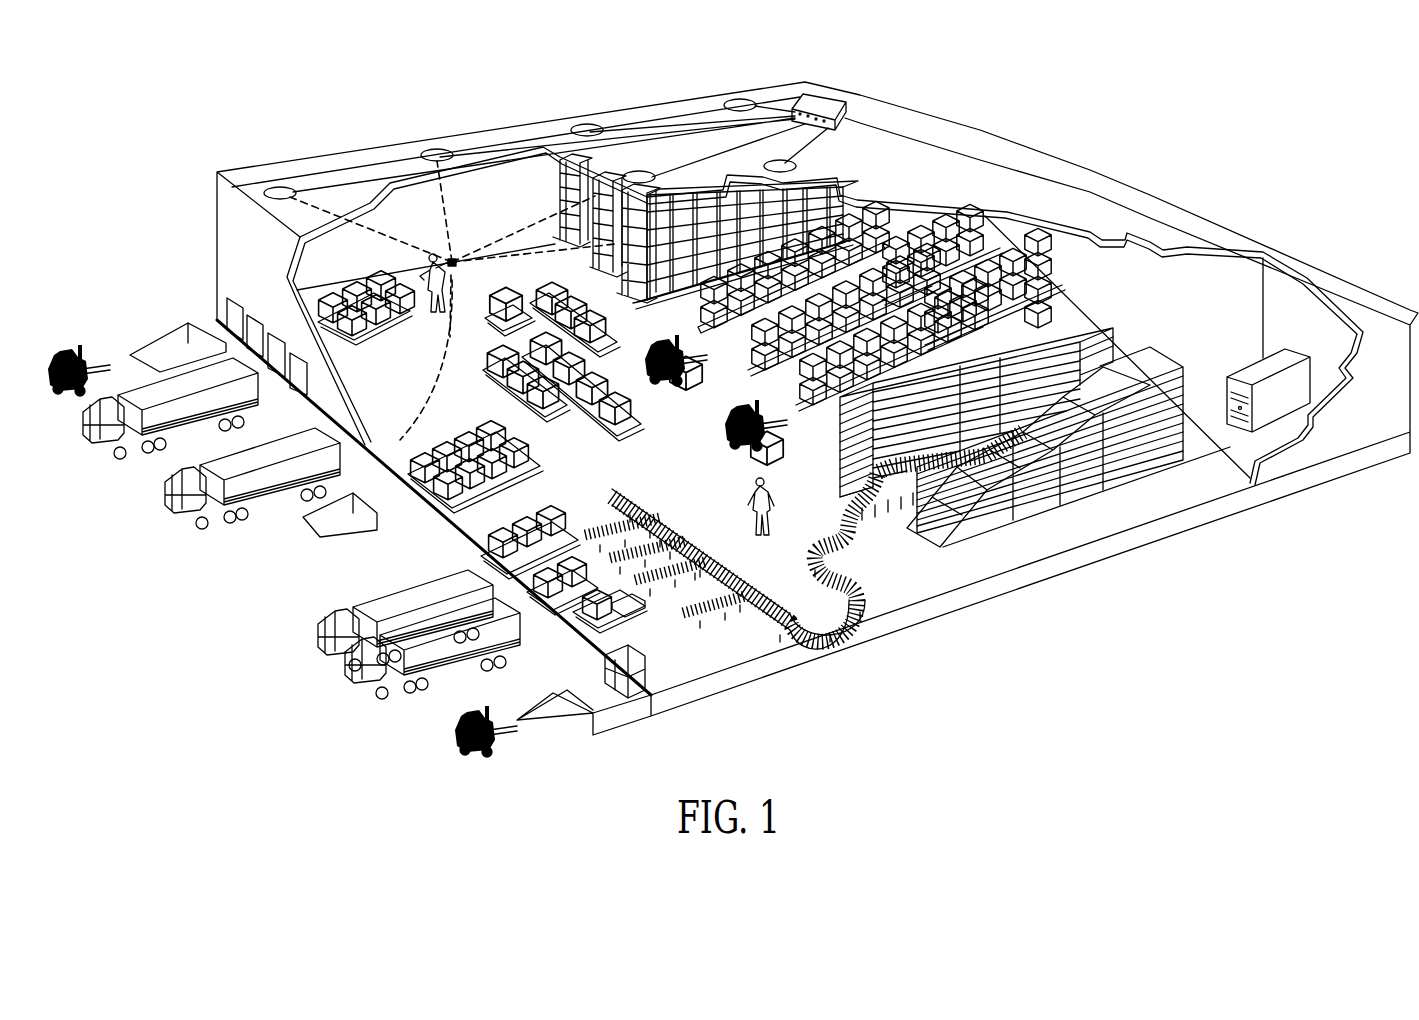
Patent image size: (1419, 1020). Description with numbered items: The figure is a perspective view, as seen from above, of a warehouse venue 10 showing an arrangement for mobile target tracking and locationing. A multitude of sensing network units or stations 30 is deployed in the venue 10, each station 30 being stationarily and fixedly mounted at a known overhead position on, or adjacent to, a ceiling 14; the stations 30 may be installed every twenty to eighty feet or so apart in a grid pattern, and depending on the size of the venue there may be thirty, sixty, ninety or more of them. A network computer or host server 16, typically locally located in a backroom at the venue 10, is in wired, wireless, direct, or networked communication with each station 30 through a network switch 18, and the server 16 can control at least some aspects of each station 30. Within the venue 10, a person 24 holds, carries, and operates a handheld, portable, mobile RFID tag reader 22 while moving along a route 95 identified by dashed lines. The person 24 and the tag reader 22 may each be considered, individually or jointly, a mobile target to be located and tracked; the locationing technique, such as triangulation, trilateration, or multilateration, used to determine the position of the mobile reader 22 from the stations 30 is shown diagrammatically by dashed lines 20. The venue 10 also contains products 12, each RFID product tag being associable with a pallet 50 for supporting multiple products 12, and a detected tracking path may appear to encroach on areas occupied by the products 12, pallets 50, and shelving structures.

The warehouse venue 10 is at (1012, 138).
The products 12 is at (498, 328).
The ceiling 14 is at (860, 152).
The host server 16 is at (1292, 358).
The network switch 18 is at (800, 104).
The dashed lines 20 is at (368, 232).
The mobile RFID tag reader 22 is at (456, 258).
The person 24 is at (433, 315).
The sensing network stations 30 is at (278, 190).
The pallet 50 is at (487, 315).
The route 95 is at (440, 390).